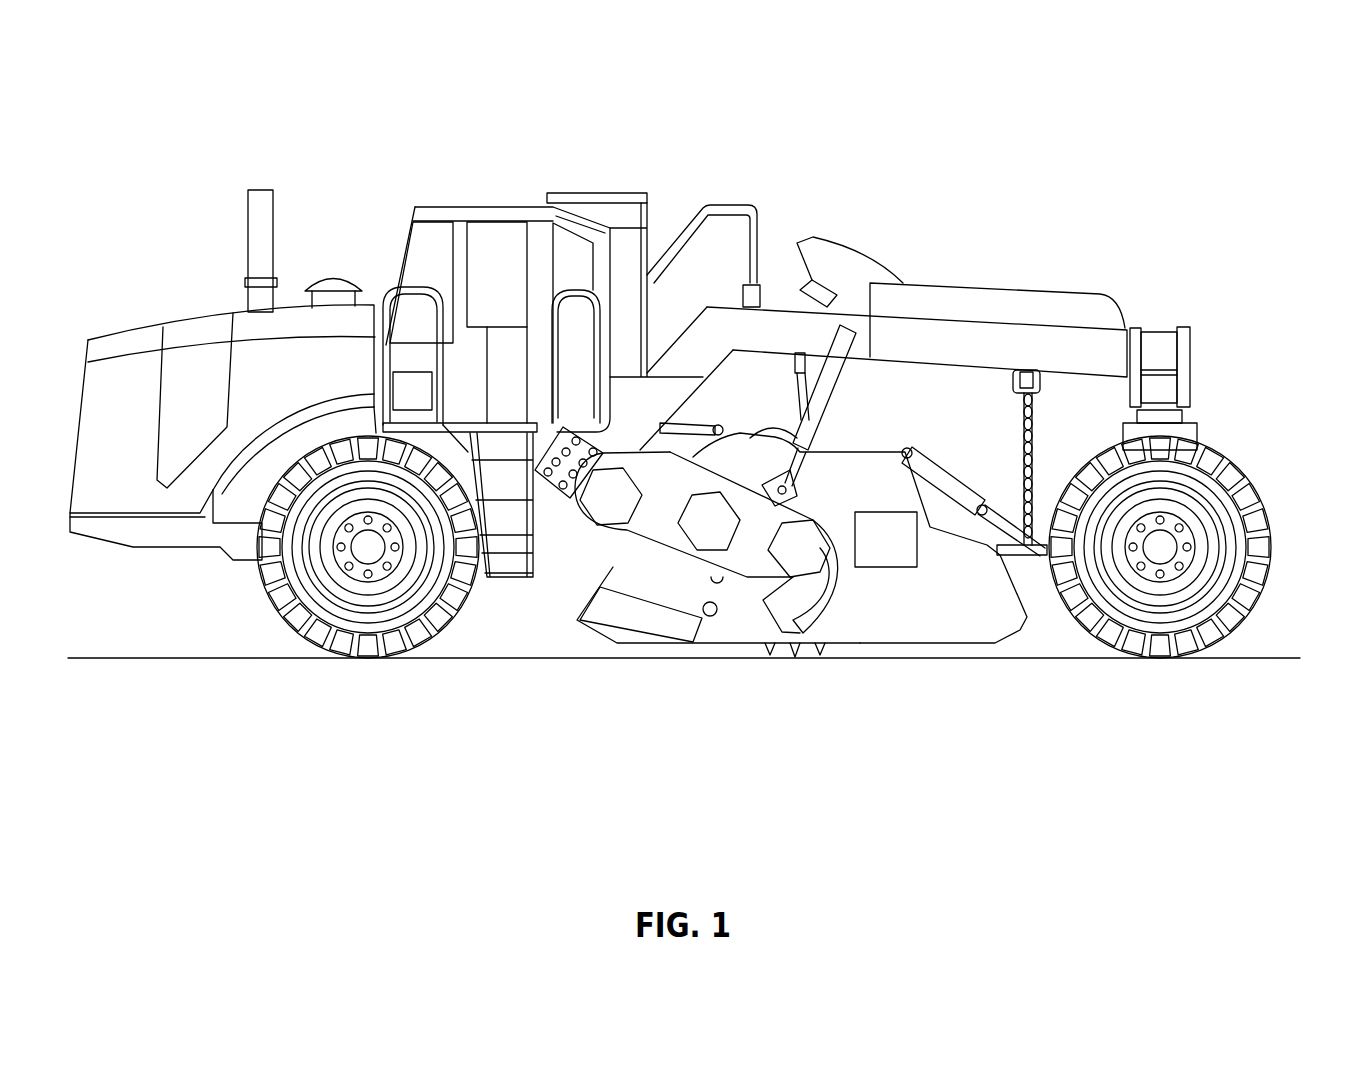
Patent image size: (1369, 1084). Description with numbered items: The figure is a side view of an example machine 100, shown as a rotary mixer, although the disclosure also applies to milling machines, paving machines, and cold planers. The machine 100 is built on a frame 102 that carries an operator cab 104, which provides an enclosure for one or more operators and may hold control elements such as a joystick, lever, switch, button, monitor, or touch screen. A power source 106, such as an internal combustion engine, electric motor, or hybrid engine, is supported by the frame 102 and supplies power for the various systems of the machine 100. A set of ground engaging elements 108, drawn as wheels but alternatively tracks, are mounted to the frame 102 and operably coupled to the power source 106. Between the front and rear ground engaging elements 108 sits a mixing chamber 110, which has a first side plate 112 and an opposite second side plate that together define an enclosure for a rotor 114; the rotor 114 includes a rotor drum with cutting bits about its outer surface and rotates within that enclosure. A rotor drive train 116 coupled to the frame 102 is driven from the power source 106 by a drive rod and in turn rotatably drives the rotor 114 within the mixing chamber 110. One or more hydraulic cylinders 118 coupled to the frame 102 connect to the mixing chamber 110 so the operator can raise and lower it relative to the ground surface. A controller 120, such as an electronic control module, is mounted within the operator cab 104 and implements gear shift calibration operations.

The machine 100 is at (185, 118).
The frame 102 is at (784, 318).
The operator cab 104 is at (497, 213).
The power source 106 is at (100, 388).
The ground engaging elements 108 is at (344, 648).
The mixing chamber 110 is at (705, 678).
The first side plate 112 is at (918, 622).
The rotor 114 is at (793, 663).
The rotor drive train 116 is at (625, 530).
The hydraulic cylinders 118 is at (845, 353).
The controller 120 is at (408, 392).